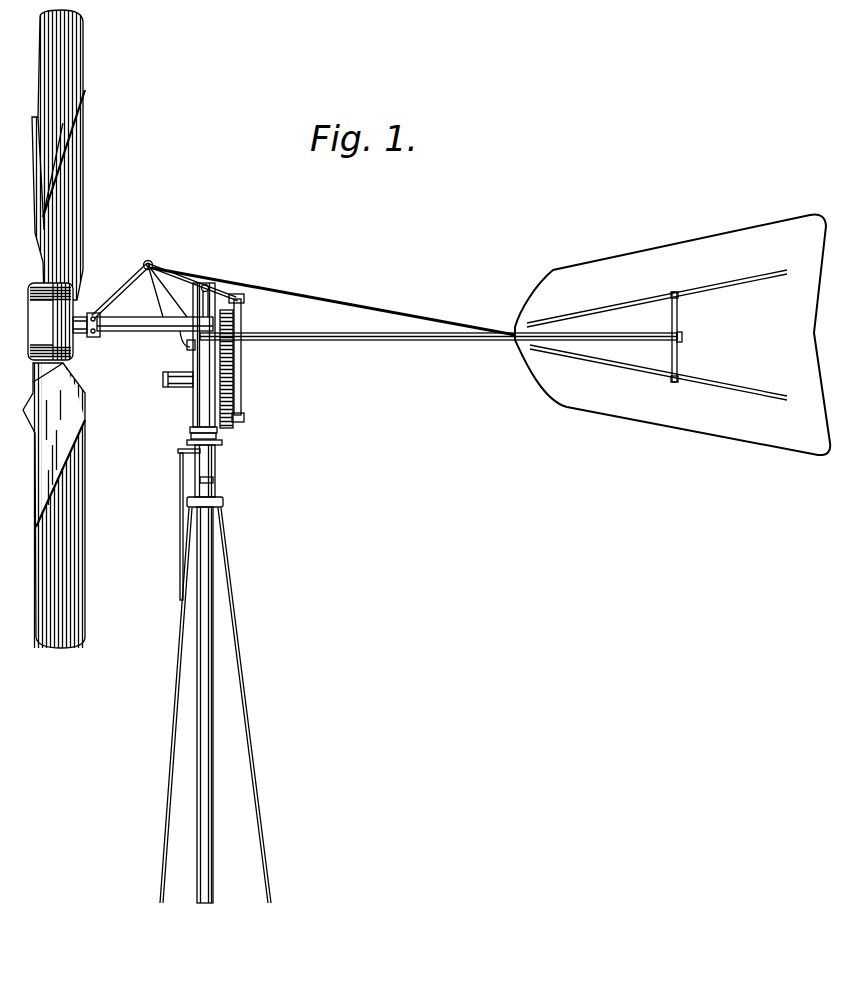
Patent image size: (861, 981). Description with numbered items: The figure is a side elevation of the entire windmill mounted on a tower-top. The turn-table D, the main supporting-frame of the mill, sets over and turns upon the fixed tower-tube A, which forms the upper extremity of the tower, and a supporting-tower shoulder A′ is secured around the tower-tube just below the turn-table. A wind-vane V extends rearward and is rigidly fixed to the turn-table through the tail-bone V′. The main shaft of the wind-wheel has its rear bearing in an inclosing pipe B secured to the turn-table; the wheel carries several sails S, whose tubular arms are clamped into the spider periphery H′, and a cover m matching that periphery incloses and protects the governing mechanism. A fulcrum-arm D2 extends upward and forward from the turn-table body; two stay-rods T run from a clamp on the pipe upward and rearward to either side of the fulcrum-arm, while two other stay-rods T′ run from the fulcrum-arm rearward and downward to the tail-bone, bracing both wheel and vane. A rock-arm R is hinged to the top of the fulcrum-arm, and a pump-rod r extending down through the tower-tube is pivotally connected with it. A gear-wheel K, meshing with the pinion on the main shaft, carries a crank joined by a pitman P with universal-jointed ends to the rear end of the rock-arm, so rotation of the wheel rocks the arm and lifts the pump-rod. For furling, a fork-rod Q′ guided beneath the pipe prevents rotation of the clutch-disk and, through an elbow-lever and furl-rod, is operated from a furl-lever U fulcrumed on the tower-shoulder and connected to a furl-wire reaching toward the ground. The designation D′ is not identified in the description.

The sail S is at (68, 50).
The cover m is at (50, 321).
The spider periphery H′ is at (60, 315).
The inclosing pipe B is at (124, 332).
The fork-rod Q′ is at (150, 332).
The stay-rod T is at (131, 277).
The fulcrum-arm D2 is at (170, 299).
The rock-arm R is at (191, 280).
The pump-rod r is at (213, 294).
The stay-rod T′ is at (320, 295).
The pitman P is at (232, 369).
The gear-wheel K is at (228, 390).
The turn-table D is at (200, 407).
The cylinder D′ is at (170, 380).
The tail-bone V′ is at (332, 340).
The wind-vane V is at (672, 334).
The furl-lever U is at (179, 455).
The supporting-tower shoulder A′ is at (215, 472).
The tower-tube A is at (213, 632).